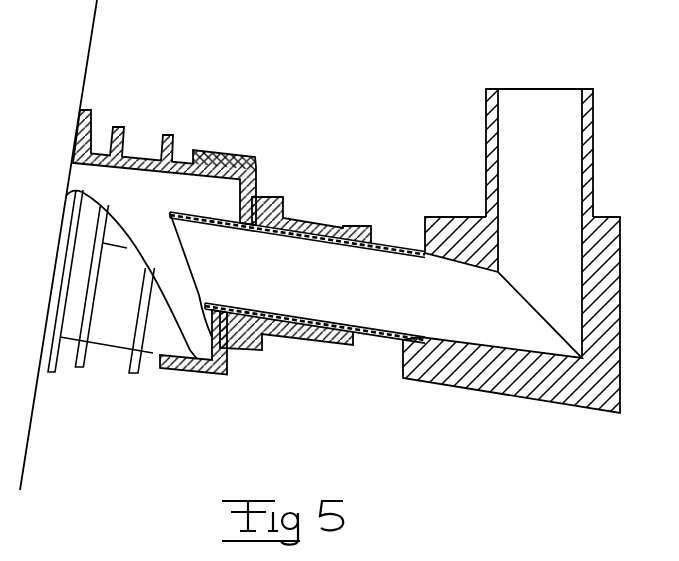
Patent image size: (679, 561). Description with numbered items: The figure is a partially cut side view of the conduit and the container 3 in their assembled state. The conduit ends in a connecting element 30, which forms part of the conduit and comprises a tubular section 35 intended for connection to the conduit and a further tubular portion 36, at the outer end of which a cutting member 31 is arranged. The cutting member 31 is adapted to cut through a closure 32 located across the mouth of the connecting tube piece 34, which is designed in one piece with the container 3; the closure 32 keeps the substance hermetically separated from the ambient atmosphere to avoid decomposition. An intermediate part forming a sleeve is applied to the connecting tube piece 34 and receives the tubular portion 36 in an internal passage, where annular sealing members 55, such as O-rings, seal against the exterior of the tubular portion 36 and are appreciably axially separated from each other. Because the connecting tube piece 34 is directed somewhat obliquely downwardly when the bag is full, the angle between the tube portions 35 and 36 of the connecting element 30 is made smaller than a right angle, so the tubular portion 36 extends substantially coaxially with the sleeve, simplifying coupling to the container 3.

The container 3 is at (92, 47).
The connecting element 30 is at (517, 393).
The cutting member 31 is at (170, 230).
The closure 32 is at (218, 212).
The connecting tube piece 34 is at (113, 328).
The tubular section 35 is at (589, 142).
The tubular portion 36 is at (381, 340).
The sealing member 55 is at (260, 193).